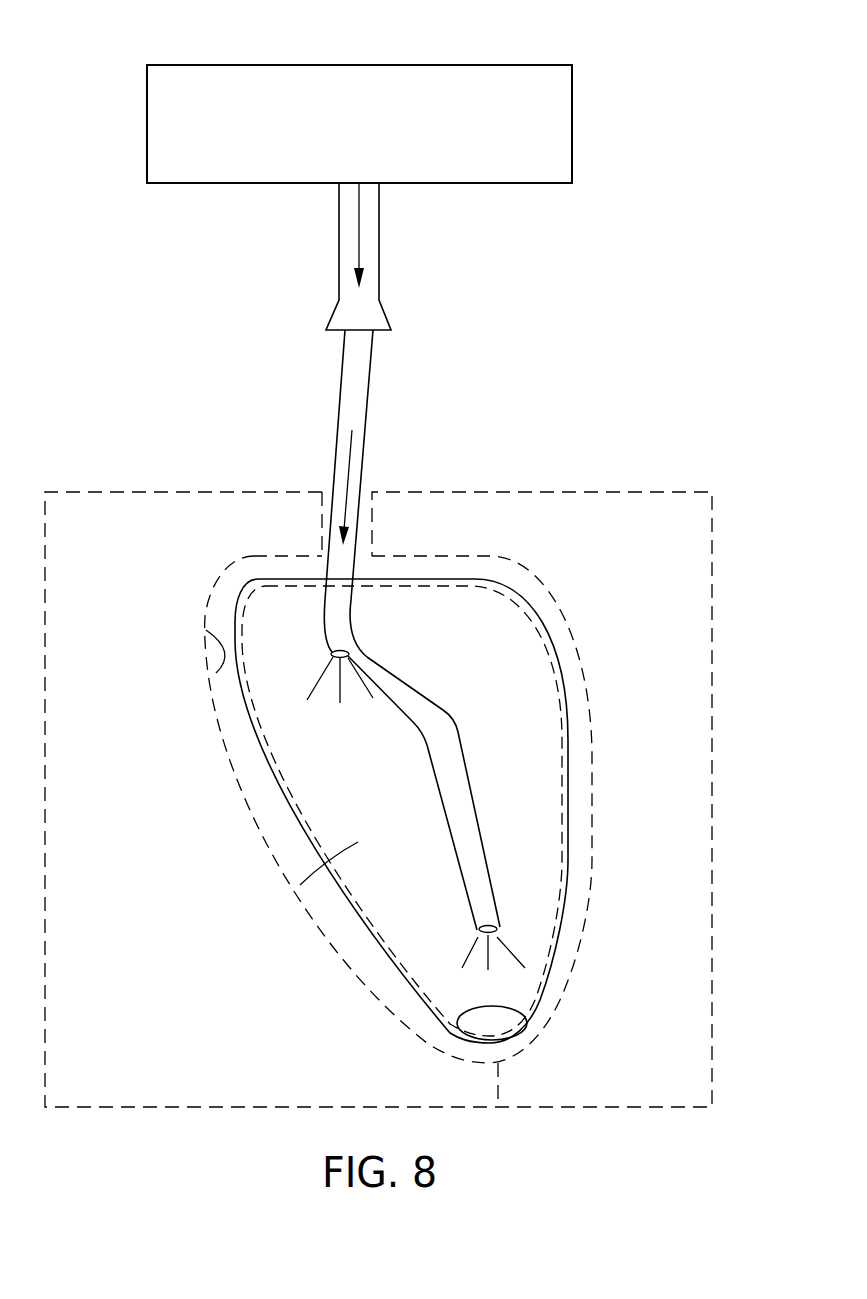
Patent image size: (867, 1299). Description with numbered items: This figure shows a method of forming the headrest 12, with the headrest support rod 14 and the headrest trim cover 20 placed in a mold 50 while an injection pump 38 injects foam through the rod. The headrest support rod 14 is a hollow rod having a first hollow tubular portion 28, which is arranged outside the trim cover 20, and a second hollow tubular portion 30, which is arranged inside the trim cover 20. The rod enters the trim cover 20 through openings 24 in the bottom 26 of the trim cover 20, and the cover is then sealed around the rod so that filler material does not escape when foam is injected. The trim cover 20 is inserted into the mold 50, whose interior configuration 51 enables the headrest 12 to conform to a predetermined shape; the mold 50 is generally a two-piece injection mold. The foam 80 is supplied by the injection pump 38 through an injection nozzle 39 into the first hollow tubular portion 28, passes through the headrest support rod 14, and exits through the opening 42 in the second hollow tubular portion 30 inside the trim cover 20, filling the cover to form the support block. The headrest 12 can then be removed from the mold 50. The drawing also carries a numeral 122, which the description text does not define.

The headrest 12 is at (570, 675).
The headrest support rod 14 is at (405, 678).
The headrest trim cover 20 is at (571, 824).
The opening 24 is at (367, 578).
The bottom 26 is at (450, 578).
The first hollow tubular portion 28 is at (340, 395).
The second hollow tubular portion 30 is at (470, 792).
The injection pump 38 is at (498, 65).
The injection nozzle 39 is at (379, 252).
The opening 42 is at (502, 930).
The mold 50 is at (580, 490).
The interior configuration 51 is at (205, 633).
The foam 80 is at (340, 693).
The attachment strap 122 is at (305, 871).